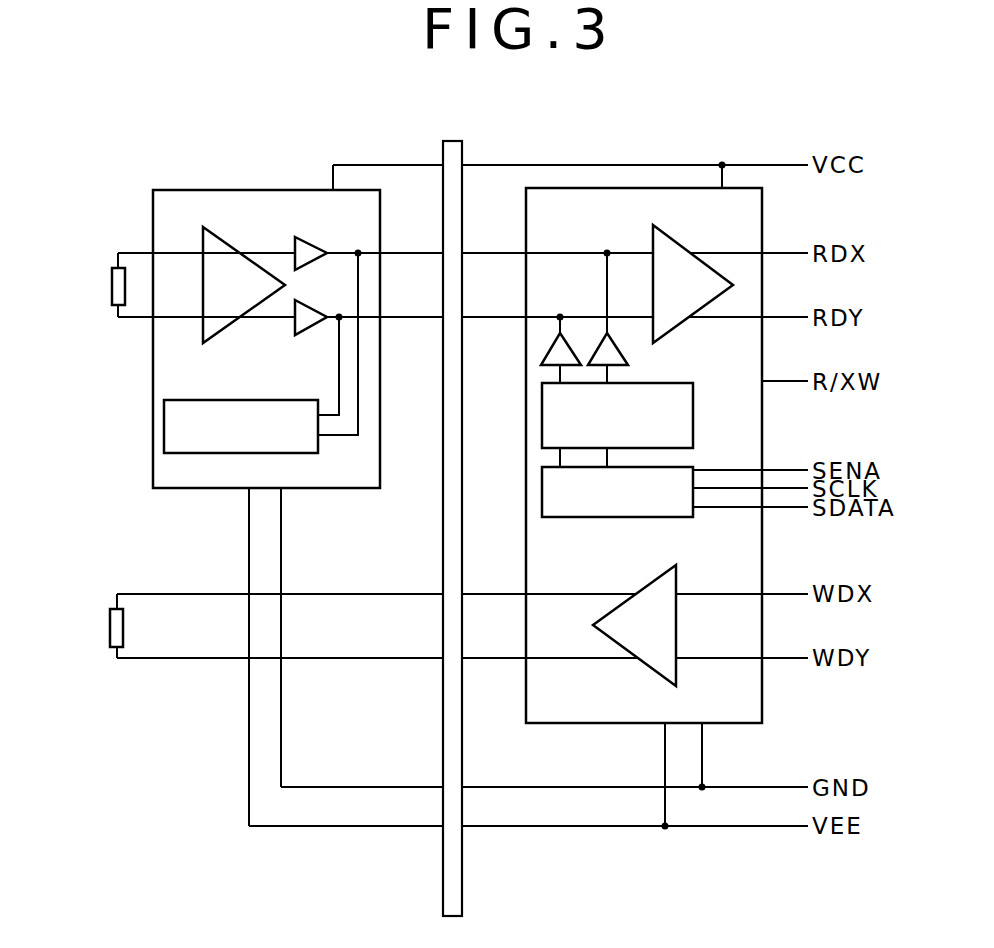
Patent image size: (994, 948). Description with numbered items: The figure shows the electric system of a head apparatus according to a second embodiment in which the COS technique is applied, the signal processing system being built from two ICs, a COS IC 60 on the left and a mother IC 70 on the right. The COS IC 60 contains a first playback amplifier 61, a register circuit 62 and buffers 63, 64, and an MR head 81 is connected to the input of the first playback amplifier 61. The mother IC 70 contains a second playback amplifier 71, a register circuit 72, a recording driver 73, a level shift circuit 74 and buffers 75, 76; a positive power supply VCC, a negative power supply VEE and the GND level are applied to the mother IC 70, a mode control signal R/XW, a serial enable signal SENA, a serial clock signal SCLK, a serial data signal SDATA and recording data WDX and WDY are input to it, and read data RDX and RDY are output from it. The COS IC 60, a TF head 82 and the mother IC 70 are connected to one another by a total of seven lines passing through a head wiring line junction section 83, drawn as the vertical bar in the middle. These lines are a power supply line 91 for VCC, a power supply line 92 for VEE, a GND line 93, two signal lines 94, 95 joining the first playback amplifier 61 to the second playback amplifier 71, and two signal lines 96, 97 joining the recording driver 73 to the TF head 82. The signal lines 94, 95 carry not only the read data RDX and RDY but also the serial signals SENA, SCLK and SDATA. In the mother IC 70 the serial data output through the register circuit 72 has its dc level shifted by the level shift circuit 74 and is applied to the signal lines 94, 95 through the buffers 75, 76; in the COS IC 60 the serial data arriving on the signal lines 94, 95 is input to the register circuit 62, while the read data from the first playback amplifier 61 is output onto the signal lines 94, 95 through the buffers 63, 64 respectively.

The COS IC 60 is at (200, 189).
The first playback amplifier 61 is at (237, 250).
The register circuit 62 is at (180, 399).
The buffer 63 is at (306, 238).
The buffer 64 is at (310, 334).
The mother IC 70 is at (583, 187).
The second playback amplifier 71 is at (684, 246).
The register circuit 72 is at (575, 519).
The recording driver 73 is at (641, 666).
The level shift circuit 74 is at (696, 401).
The buffer 75 is at (573, 343).
The buffer 76 is at (628, 351).
The MR head 81 is at (112, 290).
The TF head 82 is at (110, 630).
The head wiring line junction section 83 is at (462, 896).
The power supply line 91 is at (490, 167).
The power supply line 92 is at (574, 829).
The GND line 93 is at (493, 785).
The signal line 94 is at (500, 256).
The signal line 95 is at (495, 320).
The signal line 96 is at (494, 597).
The signal line 97 is at (493, 661).